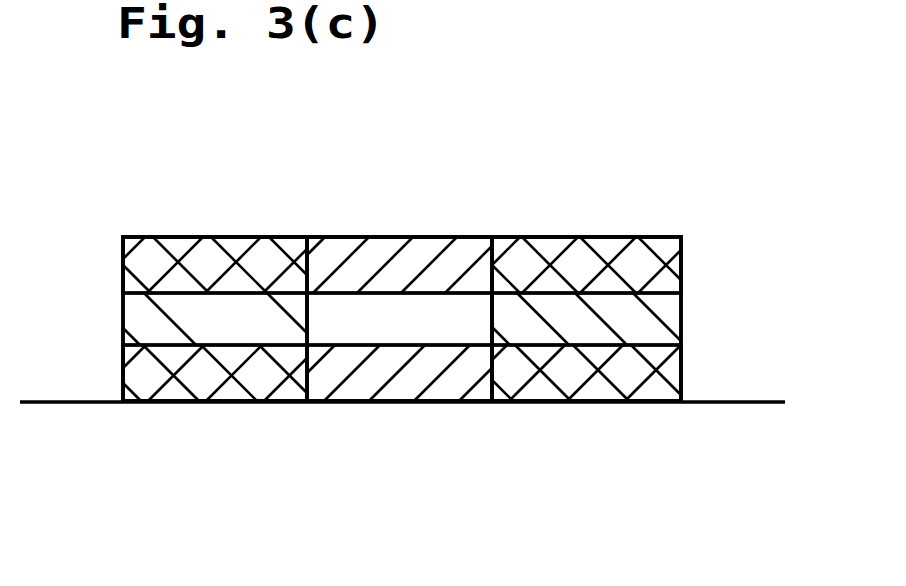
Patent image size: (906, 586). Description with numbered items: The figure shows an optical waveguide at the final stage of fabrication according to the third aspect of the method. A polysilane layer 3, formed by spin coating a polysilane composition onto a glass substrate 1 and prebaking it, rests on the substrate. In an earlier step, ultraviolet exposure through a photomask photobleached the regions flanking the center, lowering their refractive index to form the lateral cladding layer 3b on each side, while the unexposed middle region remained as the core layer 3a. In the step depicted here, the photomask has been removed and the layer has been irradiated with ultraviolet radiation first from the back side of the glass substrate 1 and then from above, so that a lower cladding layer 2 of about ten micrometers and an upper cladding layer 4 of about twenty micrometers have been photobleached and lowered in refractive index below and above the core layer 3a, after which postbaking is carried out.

The glass substrate 1 is at (720, 410).
The lower cladding layer 2 is at (398, 385).
The polysilane layer 3 is at (103, 235).
The core layer 3a is at (421, 316).
The lateral cladding layer 3b is at (200, 318).
The upper cladding layer 4 is at (363, 258).